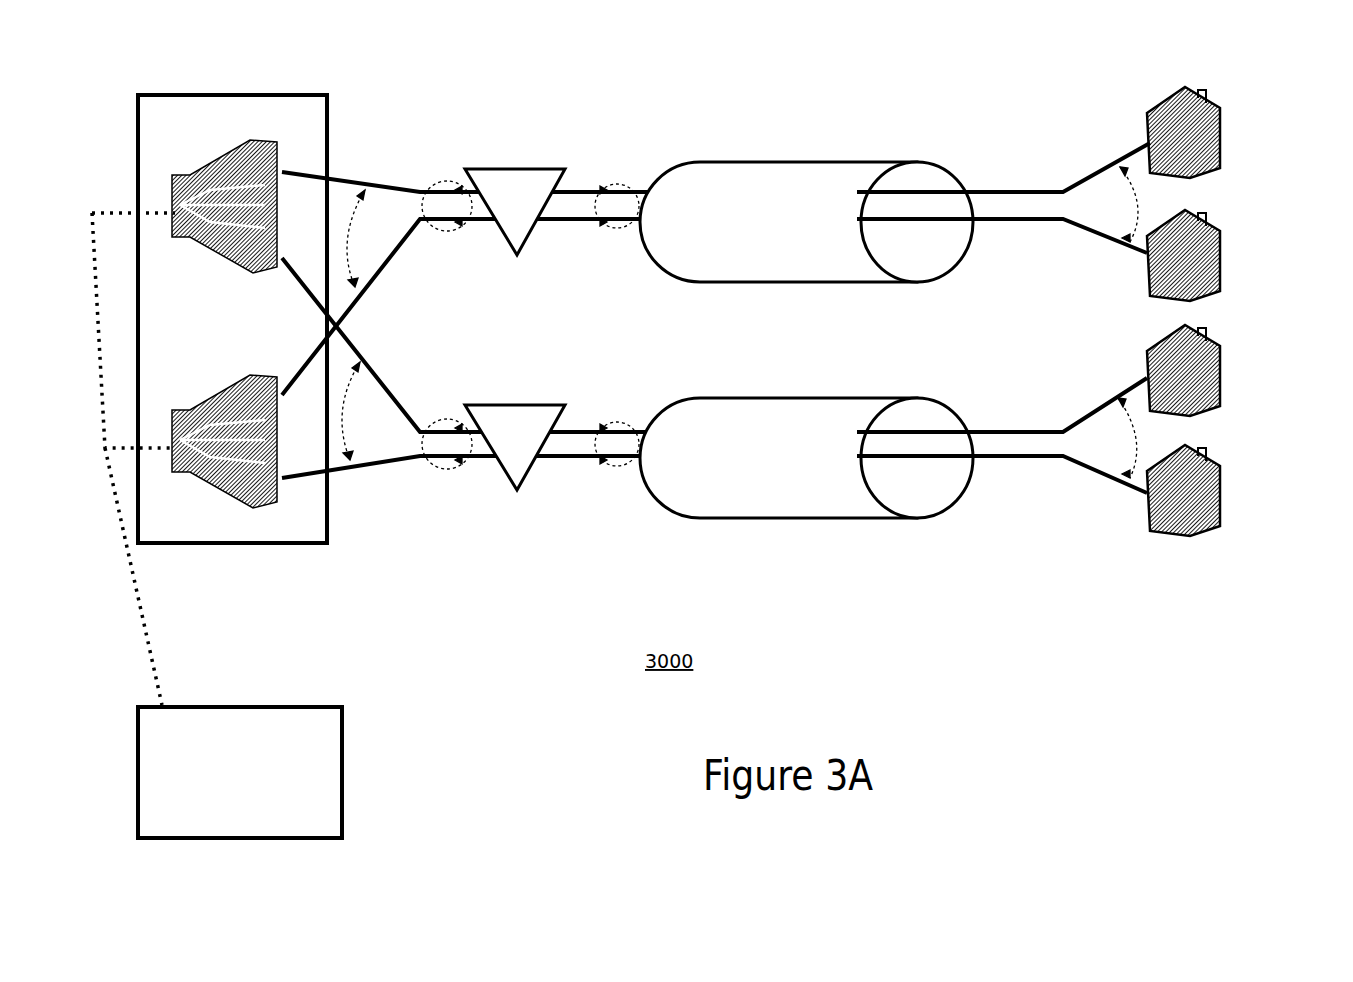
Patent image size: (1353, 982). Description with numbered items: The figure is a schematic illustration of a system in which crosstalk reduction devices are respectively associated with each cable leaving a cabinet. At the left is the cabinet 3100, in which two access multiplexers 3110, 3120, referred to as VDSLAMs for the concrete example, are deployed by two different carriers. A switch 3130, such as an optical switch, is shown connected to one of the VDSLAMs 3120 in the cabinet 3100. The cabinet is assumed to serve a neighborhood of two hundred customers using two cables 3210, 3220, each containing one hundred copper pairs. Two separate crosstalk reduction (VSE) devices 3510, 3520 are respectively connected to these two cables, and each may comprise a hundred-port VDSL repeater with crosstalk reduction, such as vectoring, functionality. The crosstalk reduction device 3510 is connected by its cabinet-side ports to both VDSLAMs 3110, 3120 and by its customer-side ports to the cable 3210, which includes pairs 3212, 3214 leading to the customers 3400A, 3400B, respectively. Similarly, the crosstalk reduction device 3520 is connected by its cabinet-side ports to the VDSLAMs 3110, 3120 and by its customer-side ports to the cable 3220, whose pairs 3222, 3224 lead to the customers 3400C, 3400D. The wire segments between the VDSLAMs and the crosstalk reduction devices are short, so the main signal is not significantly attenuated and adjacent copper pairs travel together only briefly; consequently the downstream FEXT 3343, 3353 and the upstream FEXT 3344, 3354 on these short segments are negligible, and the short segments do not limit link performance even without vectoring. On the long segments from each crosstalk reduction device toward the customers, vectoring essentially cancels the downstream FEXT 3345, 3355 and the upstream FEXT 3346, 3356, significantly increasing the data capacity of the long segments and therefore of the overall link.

The cabinet 3100 is at (218, 91).
The access multiplexer 3110 is at (255, 135).
The access multiplexer 3120 is at (268, 510).
The switch 3130 is at (343, 720).
The cable 3210 is at (745, 160).
The pair 3212 is at (585, 188).
The pair 3214 is at (578, 230).
The cable 3220 is at (768, 522).
The pair 3222 is at (585, 428).
The pair 3224 is at (578, 468).
The downstream FEXT 3343 is at (353, 232).
The upstream FEXT 3344 is at (447, 233).
The downstream FEXT 3345 is at (640, 186).
The upstream FEXT 3346 is at (1127, 207).
The downstream FEXT 3353 is at (342, 408).
The upstream FEXT 3354 is at (440, 420).
The downstream FEXT 3355 is at (640, 426).
The upstream FEXT 3356 is at (1120, 445).
The customer 3400A is at (1222, 130).
The customer 3400B is at (1222, 258).
The customer 3400C is at (1222, 368).
The customer 3400D is at (1222, 483).
The crosstalk reduction device 3510 is at (518, 166).
The crosstalk reduction device 3520 is at (518, 402).